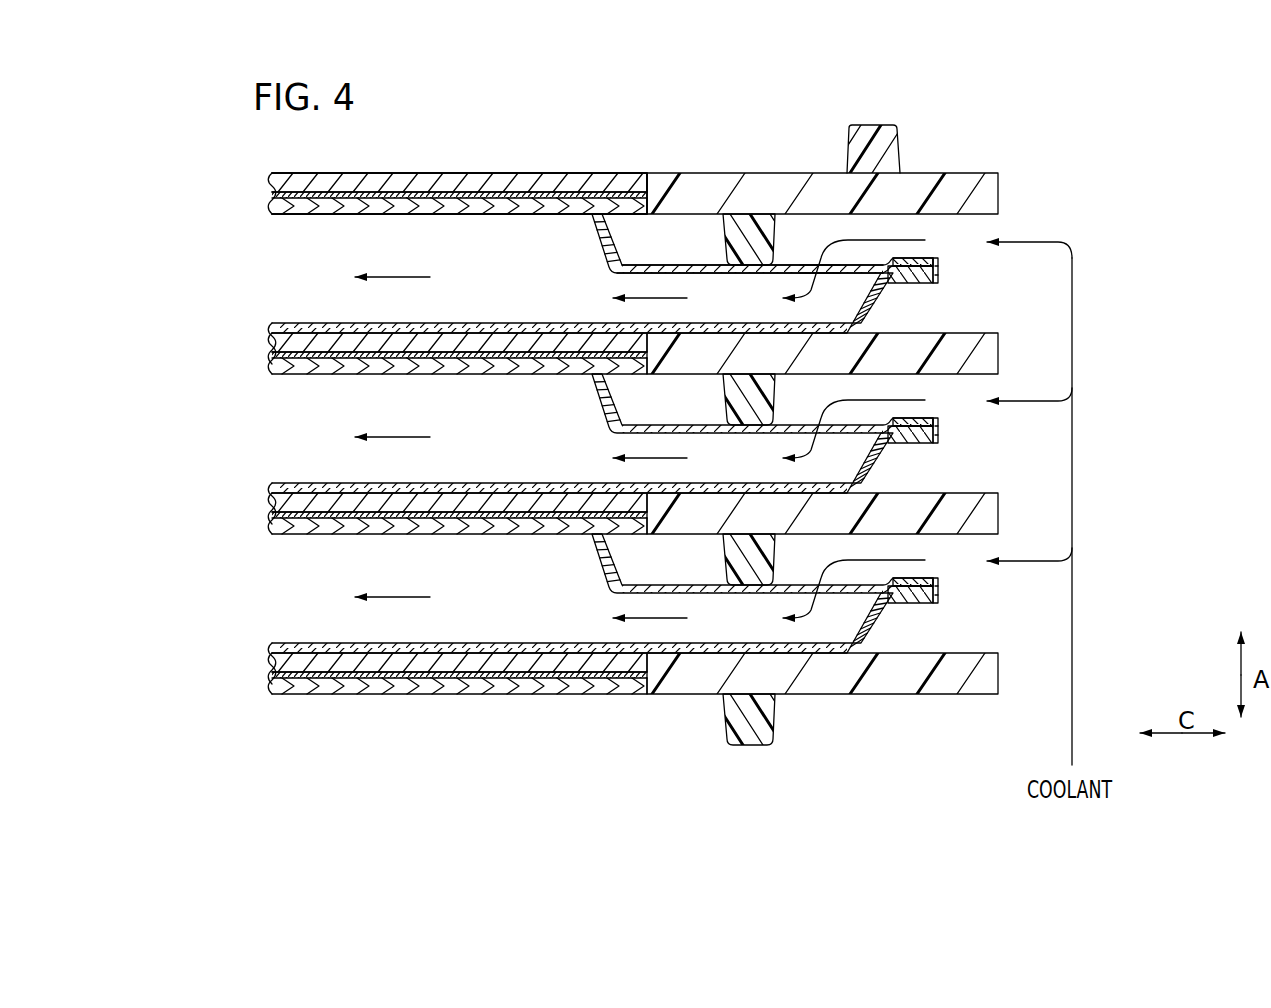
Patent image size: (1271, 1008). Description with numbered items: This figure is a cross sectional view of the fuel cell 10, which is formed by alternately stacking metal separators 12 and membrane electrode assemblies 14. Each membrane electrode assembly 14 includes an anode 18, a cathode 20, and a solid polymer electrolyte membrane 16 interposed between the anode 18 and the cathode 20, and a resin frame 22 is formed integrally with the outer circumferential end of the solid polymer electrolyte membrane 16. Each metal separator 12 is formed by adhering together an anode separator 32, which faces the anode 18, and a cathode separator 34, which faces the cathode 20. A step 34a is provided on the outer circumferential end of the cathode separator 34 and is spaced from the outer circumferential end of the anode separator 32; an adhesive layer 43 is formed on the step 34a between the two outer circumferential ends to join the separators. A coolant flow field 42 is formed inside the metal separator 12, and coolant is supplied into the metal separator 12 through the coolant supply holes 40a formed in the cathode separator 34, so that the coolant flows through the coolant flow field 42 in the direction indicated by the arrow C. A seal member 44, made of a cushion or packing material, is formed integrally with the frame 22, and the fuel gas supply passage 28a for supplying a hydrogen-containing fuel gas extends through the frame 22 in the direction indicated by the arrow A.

The fuel cell 10 is at (692, 262).
The metal separator 12 is at (452, 140).
The membrane electrode assembly 14 is at (1003, 176).
The solid polymer electrolyte membrane 16 is at (270, 352).
The anode 18 is at (270, 338).
The cathode 20 is at (270, 366).
The resin frame 22 is at (990, 360).
The fuel gas supply passage 28a is at (1073, 488).
The anode separator 32 is at (500, 323).
The cathode separator 34 is at (613, 240).
The step 34a is at (907, 267).
The coolant supply holes 40a is at (819, 266).
The coolant flow field 42 is at (547, 278).
The adhesive layer 43 is at (917, 270).
The seal member 44 is at (902, 136).